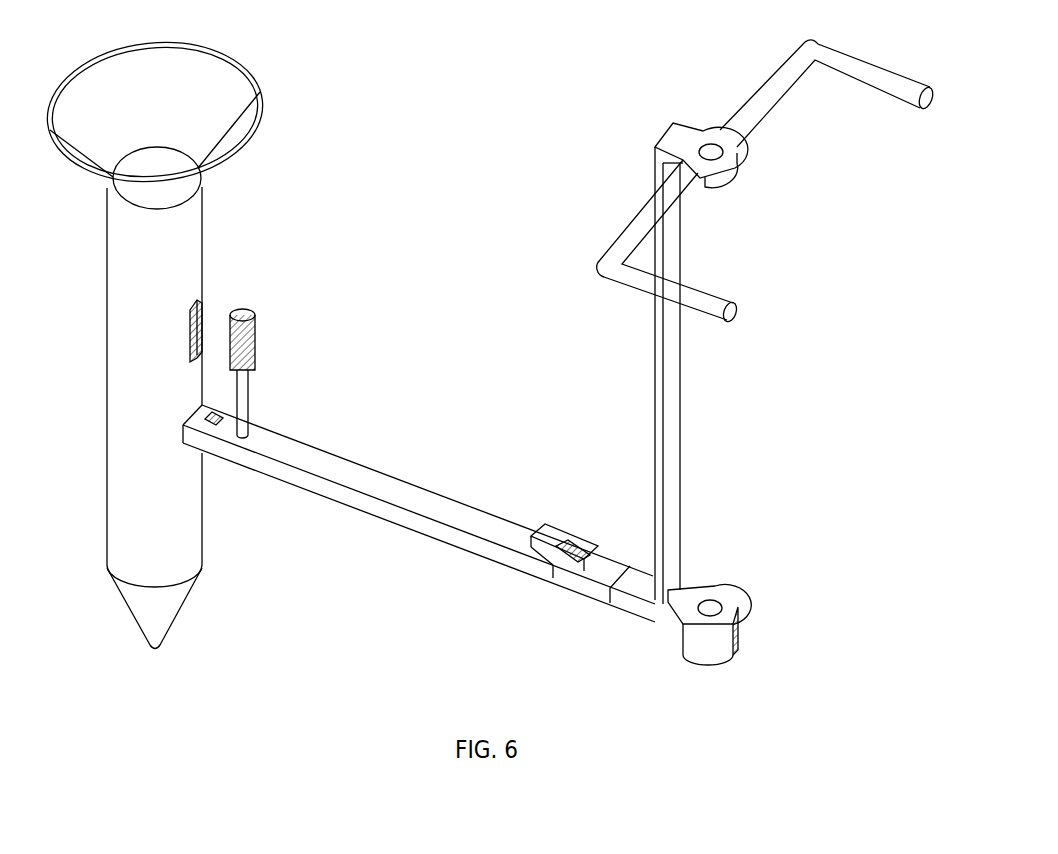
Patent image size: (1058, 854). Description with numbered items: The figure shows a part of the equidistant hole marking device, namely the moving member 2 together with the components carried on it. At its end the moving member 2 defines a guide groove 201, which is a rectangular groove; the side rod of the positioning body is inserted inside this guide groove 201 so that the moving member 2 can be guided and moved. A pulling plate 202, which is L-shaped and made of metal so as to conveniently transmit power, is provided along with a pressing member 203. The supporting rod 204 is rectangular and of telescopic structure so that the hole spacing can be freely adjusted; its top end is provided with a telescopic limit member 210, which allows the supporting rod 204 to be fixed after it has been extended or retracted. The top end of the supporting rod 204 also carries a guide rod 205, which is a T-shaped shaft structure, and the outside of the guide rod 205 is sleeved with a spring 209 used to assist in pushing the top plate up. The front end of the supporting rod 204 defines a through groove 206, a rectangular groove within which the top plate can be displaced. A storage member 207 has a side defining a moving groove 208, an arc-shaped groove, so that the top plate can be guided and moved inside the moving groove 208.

The moving member 2 is at (663, 620).
The guide groove 201 is at (738, 606).
The pulling plate 202 is at (690, 403).
The pressing member 203 is at (627, 288).
The supporting rod 204 is at (463, 530).
The guide rod 205 is at (250, 398).
The through groove 206 is at (215, 440).
The storage member 207 is at (150, 355).
The moving groove 208 is at (203, 310).
The spring 209 is at (248, 352).
The telescopic limit member 210 is at (562, 542).